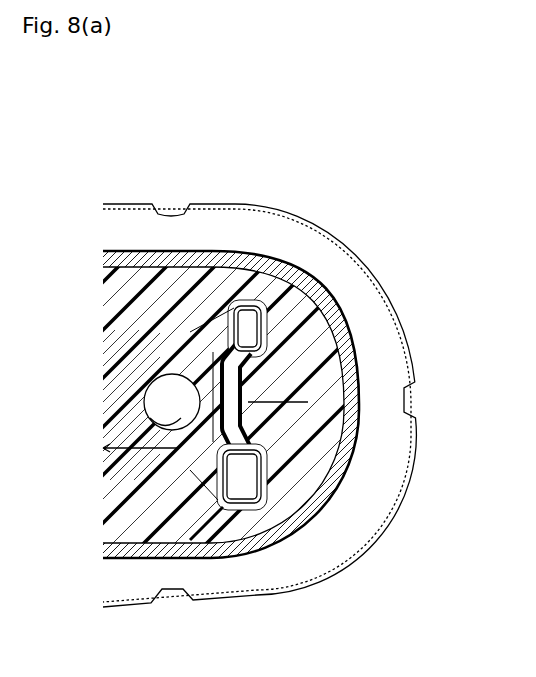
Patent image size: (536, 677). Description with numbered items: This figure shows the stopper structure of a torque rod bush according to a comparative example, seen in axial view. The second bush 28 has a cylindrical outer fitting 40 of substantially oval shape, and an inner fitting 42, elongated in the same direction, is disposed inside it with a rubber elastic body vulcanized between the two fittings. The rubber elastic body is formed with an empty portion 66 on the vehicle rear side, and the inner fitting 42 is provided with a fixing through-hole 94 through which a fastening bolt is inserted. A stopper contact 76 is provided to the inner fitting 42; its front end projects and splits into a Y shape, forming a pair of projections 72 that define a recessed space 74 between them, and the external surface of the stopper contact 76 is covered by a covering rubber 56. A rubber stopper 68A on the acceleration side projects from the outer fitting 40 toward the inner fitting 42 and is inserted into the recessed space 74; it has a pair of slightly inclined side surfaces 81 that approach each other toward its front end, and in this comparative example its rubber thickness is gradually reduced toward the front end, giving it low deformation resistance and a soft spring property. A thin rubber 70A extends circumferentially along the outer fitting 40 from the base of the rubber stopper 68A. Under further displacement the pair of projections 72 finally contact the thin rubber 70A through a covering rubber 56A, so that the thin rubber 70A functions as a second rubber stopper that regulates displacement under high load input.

The second bush 28 is at (266, 200).
The inner fitting 42 is at (119, 336).
The cylindrical outer fitting 40 is at (165, 335).
The stopper contact 76 is at (262, 300).
The covering rubber 56 is at (300, 320).
The projections 72 is at (360, 253).
The thin rubber 70A is at (340, 300).
The covering rubber 56A is at (300, 340).
The side surfaces 81 is at (378, 372).
The rubber stopper 68A is at (307, 440).
The empty portion 66 is at (331, 572).
The fixing through-hole 94 is at (148, 448).
The recessed space 74 is at (255, 440).